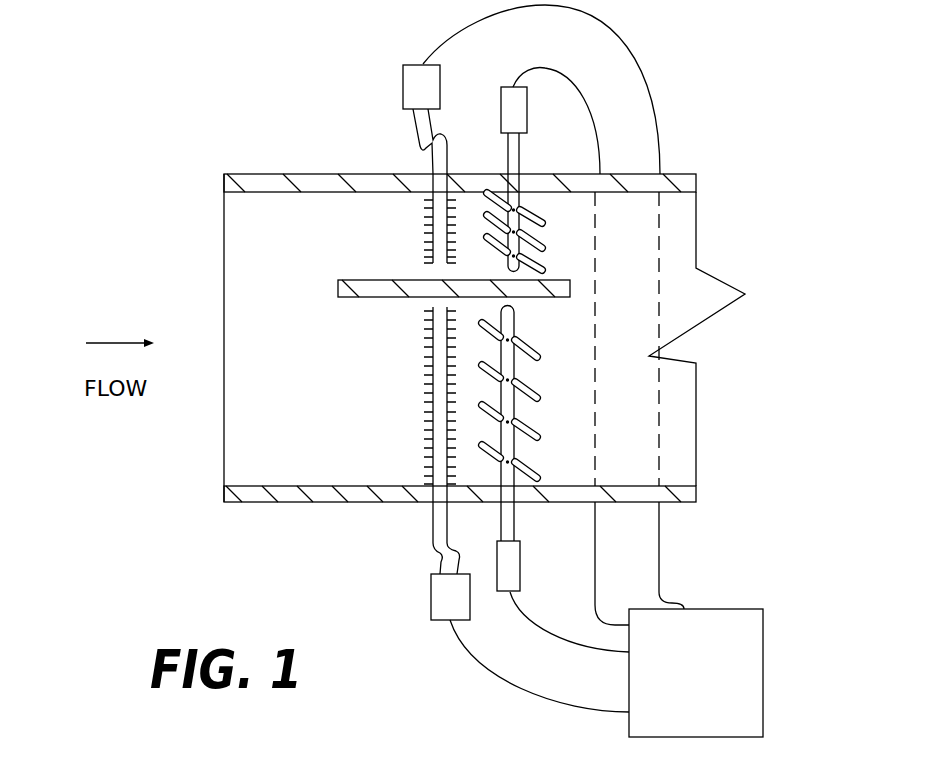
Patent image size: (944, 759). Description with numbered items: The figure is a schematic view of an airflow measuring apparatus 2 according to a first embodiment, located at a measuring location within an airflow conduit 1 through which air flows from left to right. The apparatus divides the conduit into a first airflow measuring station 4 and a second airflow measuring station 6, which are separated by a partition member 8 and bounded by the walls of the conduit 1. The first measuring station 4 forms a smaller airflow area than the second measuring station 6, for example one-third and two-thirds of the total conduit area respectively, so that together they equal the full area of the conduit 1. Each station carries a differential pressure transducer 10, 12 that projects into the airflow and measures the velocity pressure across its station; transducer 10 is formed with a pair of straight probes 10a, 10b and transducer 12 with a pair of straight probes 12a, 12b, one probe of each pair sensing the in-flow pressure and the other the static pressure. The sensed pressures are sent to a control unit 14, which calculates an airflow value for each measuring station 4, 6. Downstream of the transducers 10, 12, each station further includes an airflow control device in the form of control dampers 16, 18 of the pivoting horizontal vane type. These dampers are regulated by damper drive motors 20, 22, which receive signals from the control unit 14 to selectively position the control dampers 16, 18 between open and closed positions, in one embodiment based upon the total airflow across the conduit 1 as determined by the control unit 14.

The airflow conduit 1 is at (184, 278).
The airflow measuring apparatus 2 is at (366, 144).
The first airflow measuring station 4 is at (320, 240).
The second airflow measuring station 6 is at (325, 415).
The partition member 8 is at (378, 298).
The differential pressure transducer 10 is at (399, 128).
The straight probe 10a is at (432, 211).
The straight probe 10b is at (447, 250).
The differential pressure transducer 12 is at (397, 474).
The straight probe 12a is at (433, 331).
The straight probe 12b is at (447, 372).
The control unit 14 is at (748, 660).
The control damper 16 is at (557, 245).
The control damper 18 is at (561, 395).
The damper drive motor 20 is at (506, 97).
The damper drive motor 22 is at (507, 556).